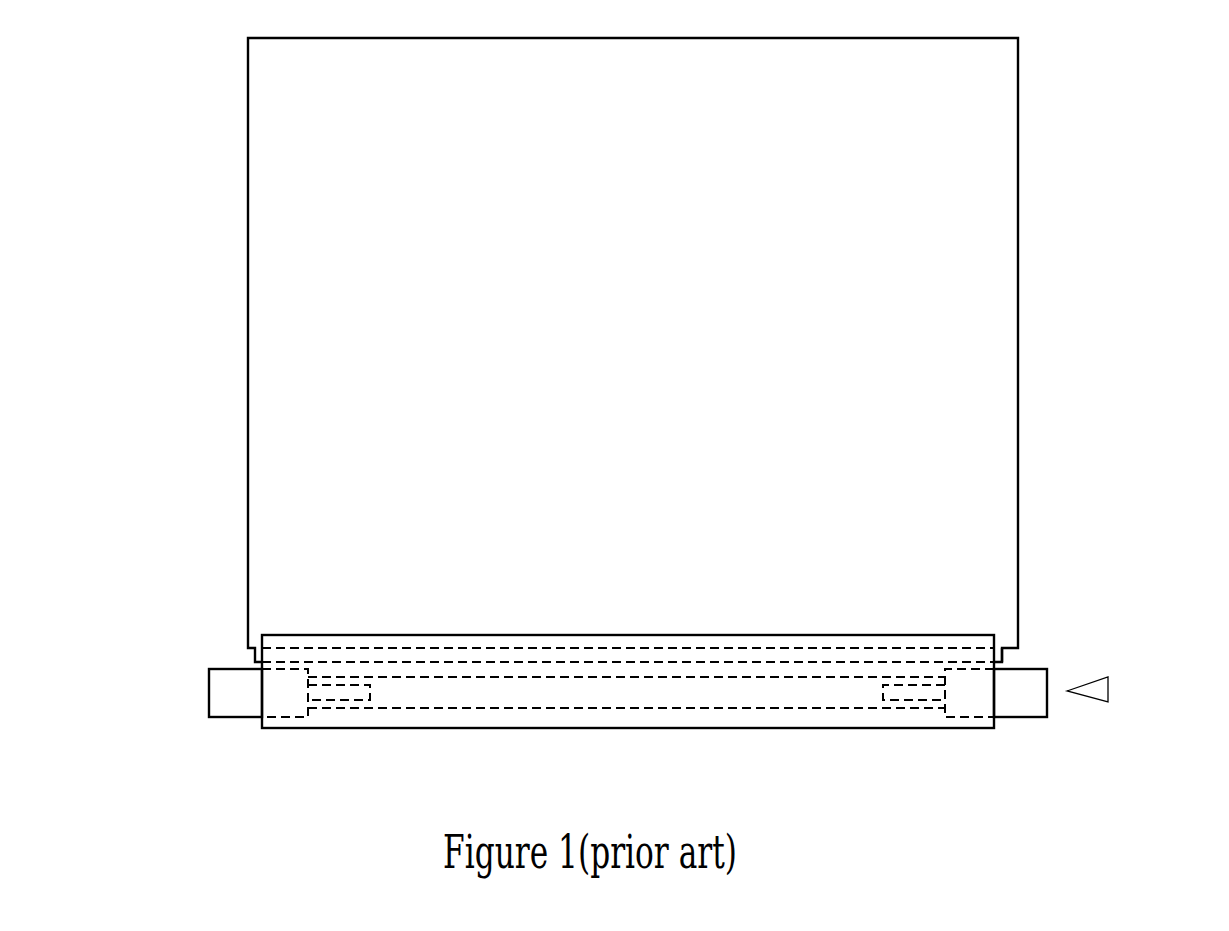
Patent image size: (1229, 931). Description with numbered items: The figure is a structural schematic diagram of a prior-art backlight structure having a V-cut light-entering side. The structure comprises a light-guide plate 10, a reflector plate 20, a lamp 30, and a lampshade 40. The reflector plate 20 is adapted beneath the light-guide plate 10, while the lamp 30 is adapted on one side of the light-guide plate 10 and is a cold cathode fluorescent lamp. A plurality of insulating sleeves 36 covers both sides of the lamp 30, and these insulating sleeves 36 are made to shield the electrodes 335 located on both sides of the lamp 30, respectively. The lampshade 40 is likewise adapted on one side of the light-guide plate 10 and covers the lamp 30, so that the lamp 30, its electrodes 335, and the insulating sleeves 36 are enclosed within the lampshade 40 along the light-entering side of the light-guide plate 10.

The light-guide plate 10 is at (983, 383).
The reflector plate 20 is at (1003, 658).
The lamp 30 is at (1108, 690).
The insulating sleeves 36 is at (243, 707).
The lampshade 40 is at (517, 728).
The electrodes 335 is at (328, 695).